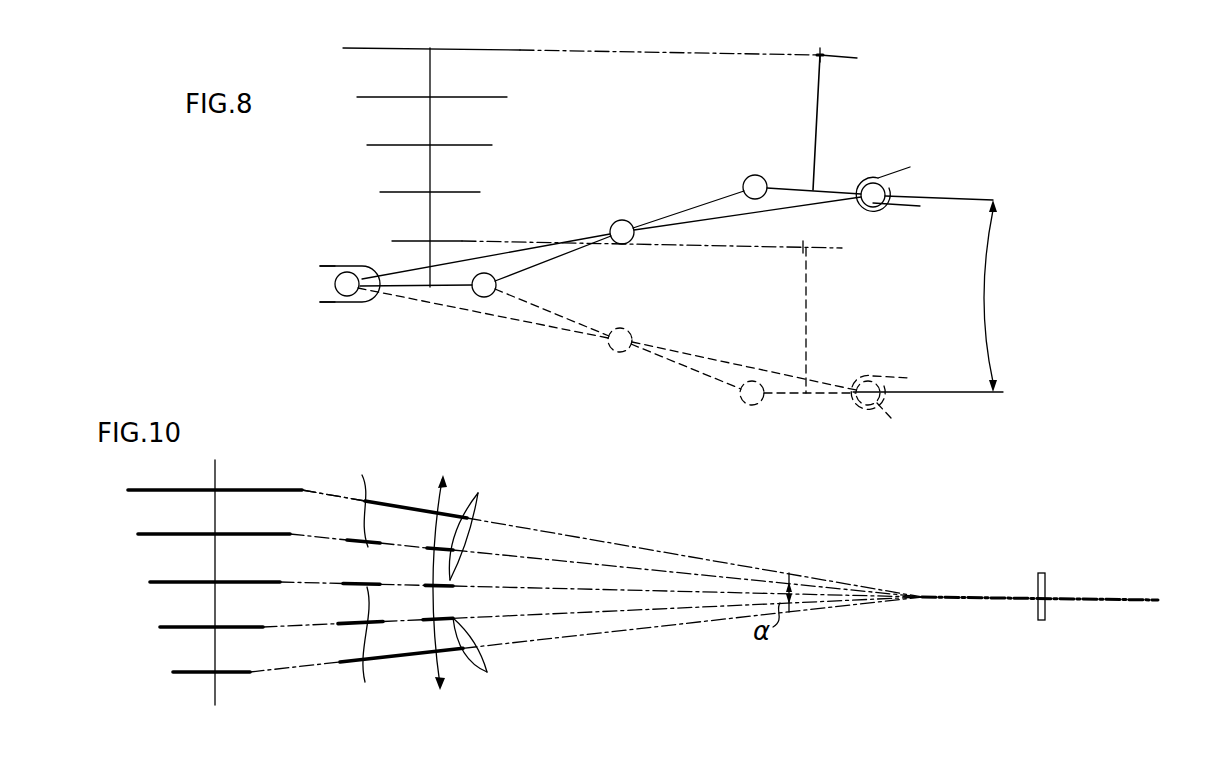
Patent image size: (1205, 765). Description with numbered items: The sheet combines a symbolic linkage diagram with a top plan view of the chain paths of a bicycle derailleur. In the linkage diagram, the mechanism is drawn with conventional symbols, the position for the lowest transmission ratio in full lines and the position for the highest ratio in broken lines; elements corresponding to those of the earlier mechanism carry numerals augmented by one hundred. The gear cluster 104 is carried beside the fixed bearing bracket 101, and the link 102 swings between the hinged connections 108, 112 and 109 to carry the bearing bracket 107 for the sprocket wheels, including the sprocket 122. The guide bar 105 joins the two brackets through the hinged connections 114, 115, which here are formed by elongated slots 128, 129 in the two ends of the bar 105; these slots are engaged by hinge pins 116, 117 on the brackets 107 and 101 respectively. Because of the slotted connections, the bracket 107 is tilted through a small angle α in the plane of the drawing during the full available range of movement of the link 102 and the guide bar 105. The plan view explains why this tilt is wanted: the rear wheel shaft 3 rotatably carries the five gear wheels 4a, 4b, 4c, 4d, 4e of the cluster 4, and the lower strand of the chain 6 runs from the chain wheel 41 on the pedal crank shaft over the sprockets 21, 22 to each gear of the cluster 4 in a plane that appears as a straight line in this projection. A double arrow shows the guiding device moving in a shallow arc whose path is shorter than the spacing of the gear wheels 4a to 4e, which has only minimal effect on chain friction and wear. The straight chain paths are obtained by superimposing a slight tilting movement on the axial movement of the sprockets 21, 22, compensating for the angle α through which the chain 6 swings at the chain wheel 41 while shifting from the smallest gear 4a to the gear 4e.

In FIG. 8, the cluster 104 is at (505, 140).
In FIG. 8, the guide bar 105 is at (507, 252).
In FIG. 8, the bearing bracket 101 is at (442, 287).
In FIG. 8, the link 102 is at (545, 269).
In FIG. 8, the bearing bracket 107 is at (788, 185).
In FIG. 8, the hinged connection 108 is at (484, 298).
In FIG. 8, the hinged connection 109 is at (752, 175).
In FIG. 8, the hinged connection 112 is at (623, 220).
In FIG. 8, the hinged connection 114 is at (894, 158).
In FIG. 8, the hinged connection 115 is at (349, 252).
In FIG. 8, the hinge pin 116 is at (912, 206).
In FIG. 8, the hinge pin 117 is at (350, 292).
In FIG. 8, the sprocket 122 is at (857, 58).
In FIG. 8, the elongated slot 128 is at (912, 170).
In FIG. 8, the elongated slot 129 is at (327, 293).
In FIG. 10, the rear wheel shaft 3 is at (215, 695).
In FIG. 10, the cluster 4 is at (491, 565).
In FIG. 10, the gear wheel 4a is at (178, 672).
In FIG. 10, the gear wheel 4b is at (172, 626).
In FIG. 10, the gear wheel 4c is at (165, 580).
In FIG. 10, the gear wheel 4d is at (160, 533).
In FIG. 10, the gear wheel 4e is at (155, 489).
In FIG. 10, the chain 6 is at (292, 670).
In FIG. 10, the sprocket 21 is at (478, 493).
In FIG. 10, the sprocket 22 is at (402, 579).
In FIG. 10, the chain wheel 41 is at (950, 600).